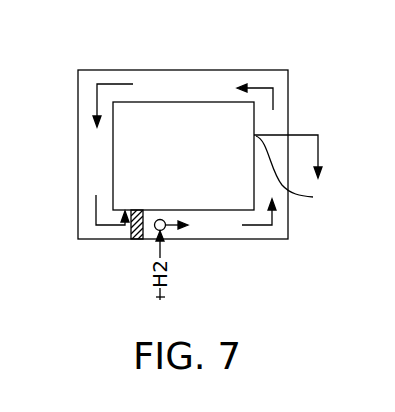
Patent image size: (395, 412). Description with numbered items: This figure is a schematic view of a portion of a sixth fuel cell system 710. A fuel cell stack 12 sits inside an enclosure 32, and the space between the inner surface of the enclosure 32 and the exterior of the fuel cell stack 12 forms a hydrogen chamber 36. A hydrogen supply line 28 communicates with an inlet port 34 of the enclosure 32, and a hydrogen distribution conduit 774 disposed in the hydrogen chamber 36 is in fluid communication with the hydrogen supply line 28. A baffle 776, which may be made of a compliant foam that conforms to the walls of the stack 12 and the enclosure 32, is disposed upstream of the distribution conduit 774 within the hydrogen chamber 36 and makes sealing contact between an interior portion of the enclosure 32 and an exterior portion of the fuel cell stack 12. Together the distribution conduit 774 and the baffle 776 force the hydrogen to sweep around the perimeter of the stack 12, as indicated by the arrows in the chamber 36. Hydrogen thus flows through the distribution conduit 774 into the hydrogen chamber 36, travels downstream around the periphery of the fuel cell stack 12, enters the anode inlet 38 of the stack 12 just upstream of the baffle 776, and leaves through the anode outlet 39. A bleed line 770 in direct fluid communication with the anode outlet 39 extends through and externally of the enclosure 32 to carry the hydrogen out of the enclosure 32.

The sixth fuel cell system 710 is at (147, 58).
The enclosure 32 is at (288, 70).
The hydrogen chamber 36 is at (278, 117).
The fuel cell stack 12 is at (195, 165).
The bleed line 770 is at (318, 150).
The anode outlet 39 is at (300, 173).
The anode inlet 38 is at (115, 212).
The baffle 776 is at (138, 240).
The inlet port 34 is at (151, 238).
The hydrogen distribution conduit 774 is at (168, 229).
The hydrogen supply line 28 is at (164, 297).